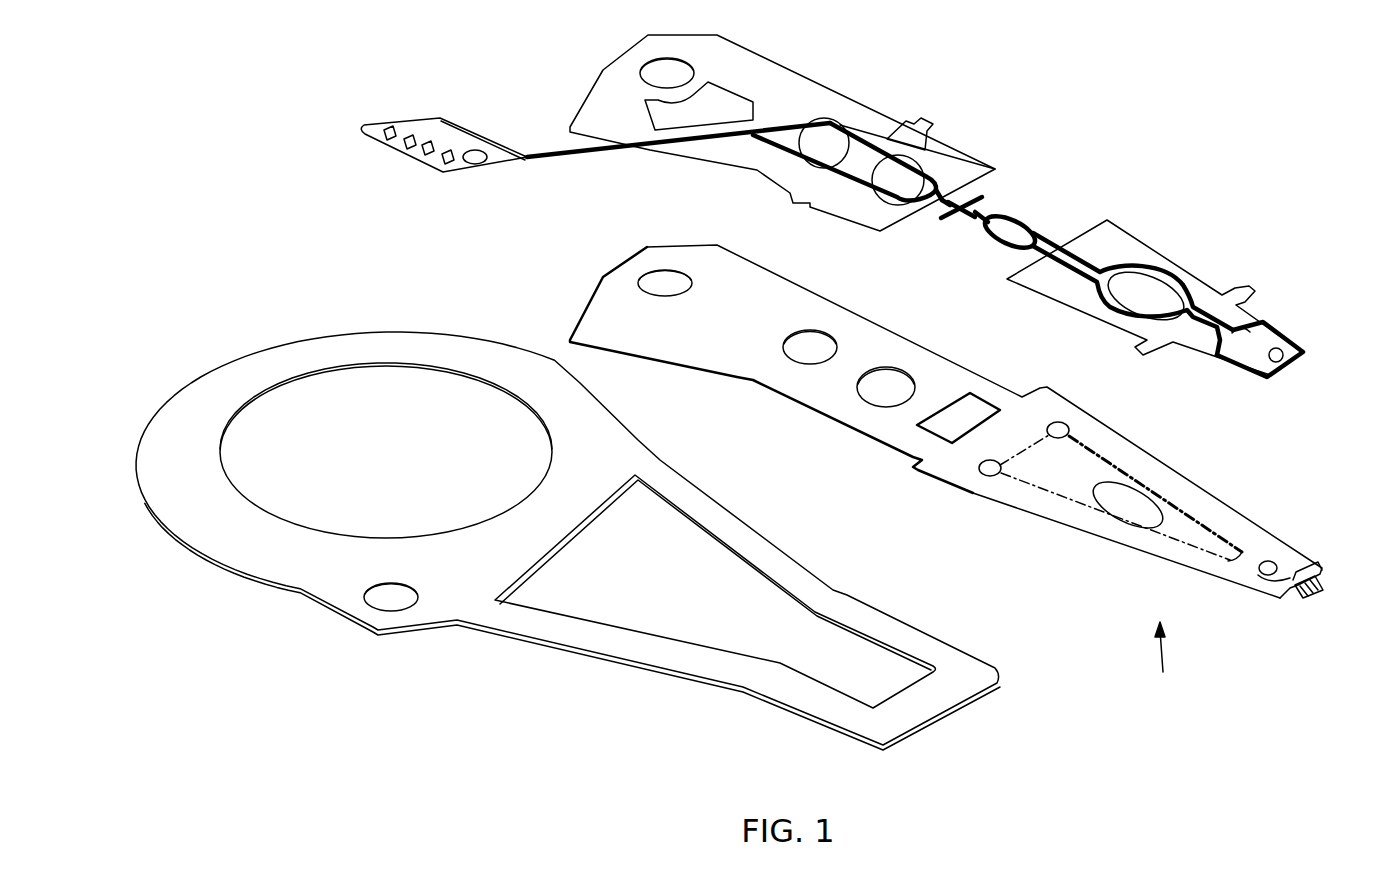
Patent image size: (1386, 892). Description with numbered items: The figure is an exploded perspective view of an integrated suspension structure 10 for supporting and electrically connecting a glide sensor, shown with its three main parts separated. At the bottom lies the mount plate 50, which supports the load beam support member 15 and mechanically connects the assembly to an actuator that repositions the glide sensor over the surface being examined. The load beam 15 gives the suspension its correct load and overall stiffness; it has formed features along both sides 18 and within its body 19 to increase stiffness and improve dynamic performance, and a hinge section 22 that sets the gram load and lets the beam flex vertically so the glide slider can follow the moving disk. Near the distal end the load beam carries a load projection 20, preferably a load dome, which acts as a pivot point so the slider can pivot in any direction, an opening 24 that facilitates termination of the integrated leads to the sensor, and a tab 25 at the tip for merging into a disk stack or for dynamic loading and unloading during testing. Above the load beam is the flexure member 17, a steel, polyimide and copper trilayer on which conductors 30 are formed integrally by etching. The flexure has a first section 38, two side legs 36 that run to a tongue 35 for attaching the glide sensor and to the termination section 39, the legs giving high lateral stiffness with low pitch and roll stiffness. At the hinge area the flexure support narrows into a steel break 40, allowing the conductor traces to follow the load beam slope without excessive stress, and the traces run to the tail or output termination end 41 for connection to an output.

The integrated suspension structure 10 is at (1163, 661).
The load beam support member 15 is at (1084, 430).
The flexure member 17 is at (740, 62).
The formed features along both sides 18 is at (1150, 556).
The formed features within the body 19 is at (1095, 475).
The load projection 20 is at (1270, 563).
The hinge section 22 is at (995, 395).
The opening 24 is at (1298, 573).
The tab 25 is at (1325, 585).
The conductors 30 is at (1187, 293).
The tongue 35 is at (1282, 335).
The side legs 36 is at (1248, 325).
The first section 38 is at (1110, 243).
The termination section 39 is at (1303, 350).
The steel break 40 is at (1018, 192).
The output termination end 41 is at (418, 150).
The mount plate 50 is at (233, 397).